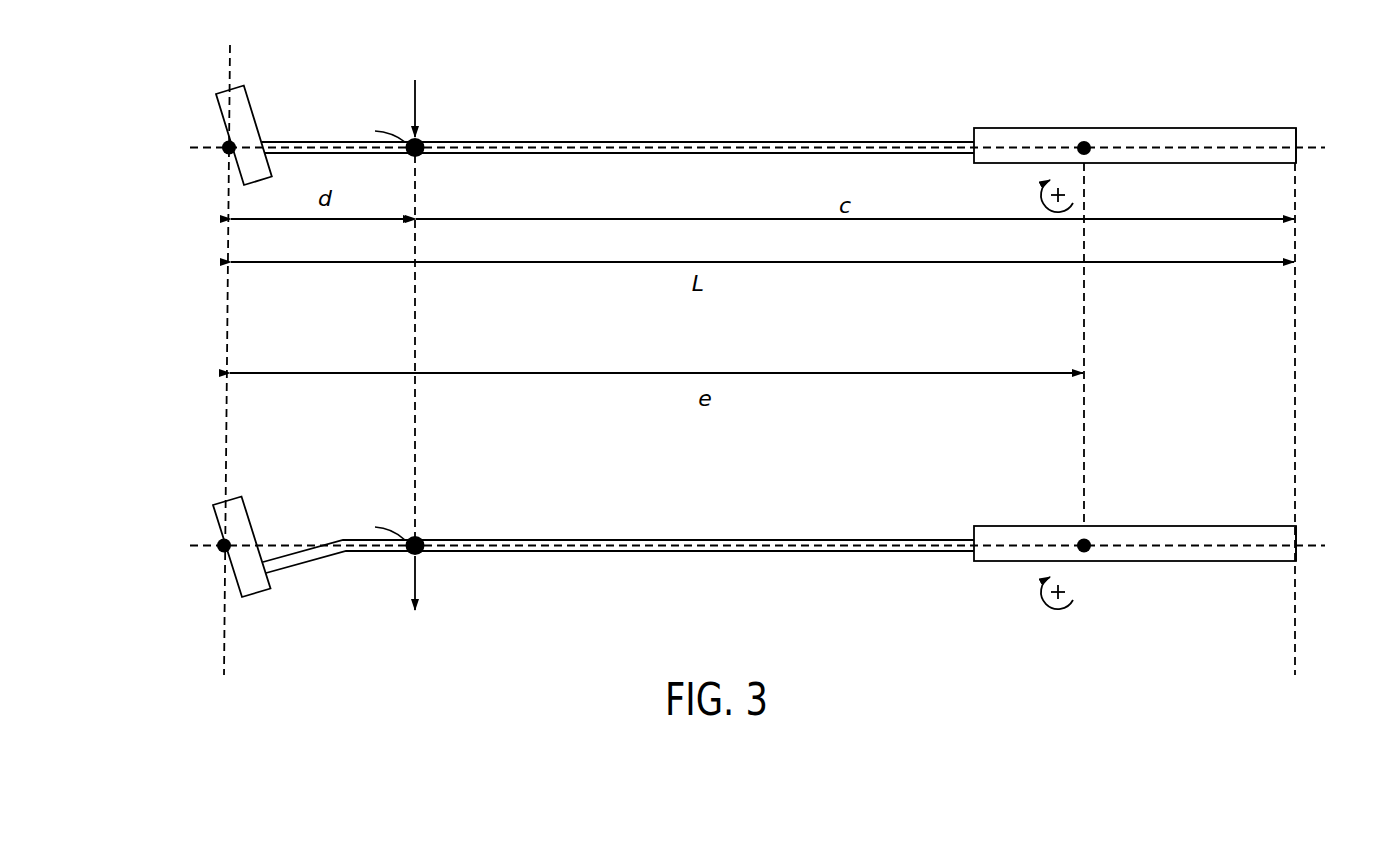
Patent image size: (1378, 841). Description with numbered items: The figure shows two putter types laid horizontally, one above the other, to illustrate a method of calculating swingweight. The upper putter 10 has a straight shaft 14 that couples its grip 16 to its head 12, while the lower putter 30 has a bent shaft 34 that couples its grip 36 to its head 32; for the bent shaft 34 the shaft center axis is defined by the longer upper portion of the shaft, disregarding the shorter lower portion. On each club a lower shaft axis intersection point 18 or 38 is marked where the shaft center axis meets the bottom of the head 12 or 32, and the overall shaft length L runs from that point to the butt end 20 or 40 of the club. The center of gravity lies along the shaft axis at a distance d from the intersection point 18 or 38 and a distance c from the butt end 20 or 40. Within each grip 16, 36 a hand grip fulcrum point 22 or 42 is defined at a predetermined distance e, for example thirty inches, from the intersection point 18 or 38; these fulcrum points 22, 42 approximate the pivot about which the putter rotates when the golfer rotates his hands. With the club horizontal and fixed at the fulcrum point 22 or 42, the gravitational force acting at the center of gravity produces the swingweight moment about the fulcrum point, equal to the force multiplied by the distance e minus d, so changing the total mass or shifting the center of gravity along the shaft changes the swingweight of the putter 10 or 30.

The putter 10 is at (381, 96).
The head 12 is at (215, 93).
The straight shaft 14 is at (688, 141).
The grip 16 is at (1018, 130).
The lower shaft axis intersection point 18 is at (225, 146).
The butt end 20 is at (1297, 139).
The hand grip fulcrum point 22 is at (1083, 140).
The putter 30 is at (348, 478).
The head 32 is at (236, 497).
The bent shaft 34 is at (597, 540).
The grip 36 is at (998, 530).
The lower shaft axis intersection point 38 is at (221, 548).
The butt end 40 is at (1297, 537).
The hand grip fulcrum point 42 is at (1086, 540).